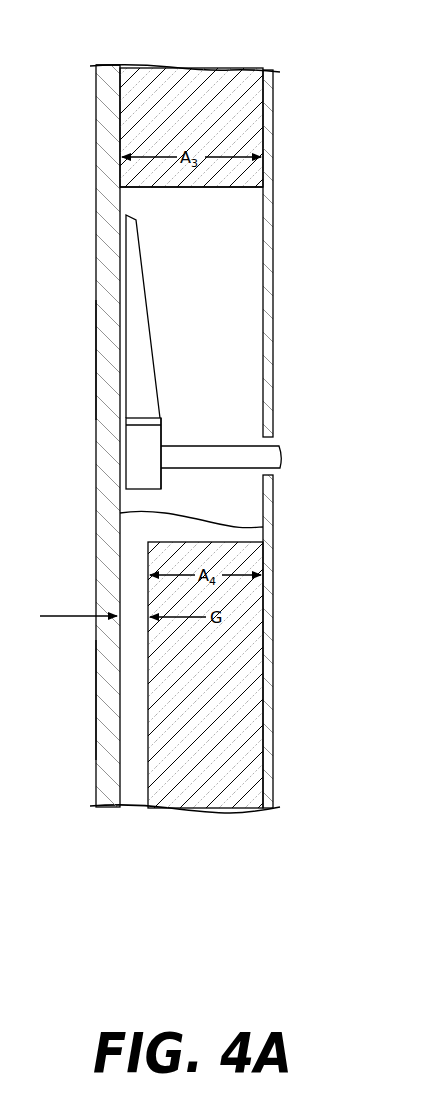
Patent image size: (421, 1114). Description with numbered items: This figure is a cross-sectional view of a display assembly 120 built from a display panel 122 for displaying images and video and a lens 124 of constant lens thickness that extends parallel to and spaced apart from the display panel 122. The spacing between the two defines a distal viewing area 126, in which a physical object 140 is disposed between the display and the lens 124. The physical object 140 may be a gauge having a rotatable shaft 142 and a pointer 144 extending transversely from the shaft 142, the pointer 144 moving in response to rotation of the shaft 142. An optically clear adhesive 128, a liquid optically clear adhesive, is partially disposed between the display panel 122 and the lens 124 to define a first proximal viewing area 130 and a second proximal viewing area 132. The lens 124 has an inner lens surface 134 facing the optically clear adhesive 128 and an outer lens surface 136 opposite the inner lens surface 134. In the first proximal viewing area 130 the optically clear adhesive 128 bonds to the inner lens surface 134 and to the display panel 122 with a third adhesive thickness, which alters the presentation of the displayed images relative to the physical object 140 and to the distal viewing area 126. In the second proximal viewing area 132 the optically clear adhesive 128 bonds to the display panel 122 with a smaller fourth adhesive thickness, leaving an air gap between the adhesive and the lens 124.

The display assembly 120 is at (302, 60).
The display panel 122 is at (268, 70).
The lens 124 is at (110, 63).
The distal viewing area 126 is at (97, 370).
The optically clear adhesive 128 is at (193, 70).
The first proximal viewing area 130 is at (97, 133).
The second proximal viewing area 132 is at (97, 668).
The inner lens surface 134 is at (266, 528).
The outer lens surface 136 is at (97, 505).
The physical object 140 is at (164, 441).
The rotatable shaft 142 is at (230, 457).
The pointer 144 is at (142, 363).